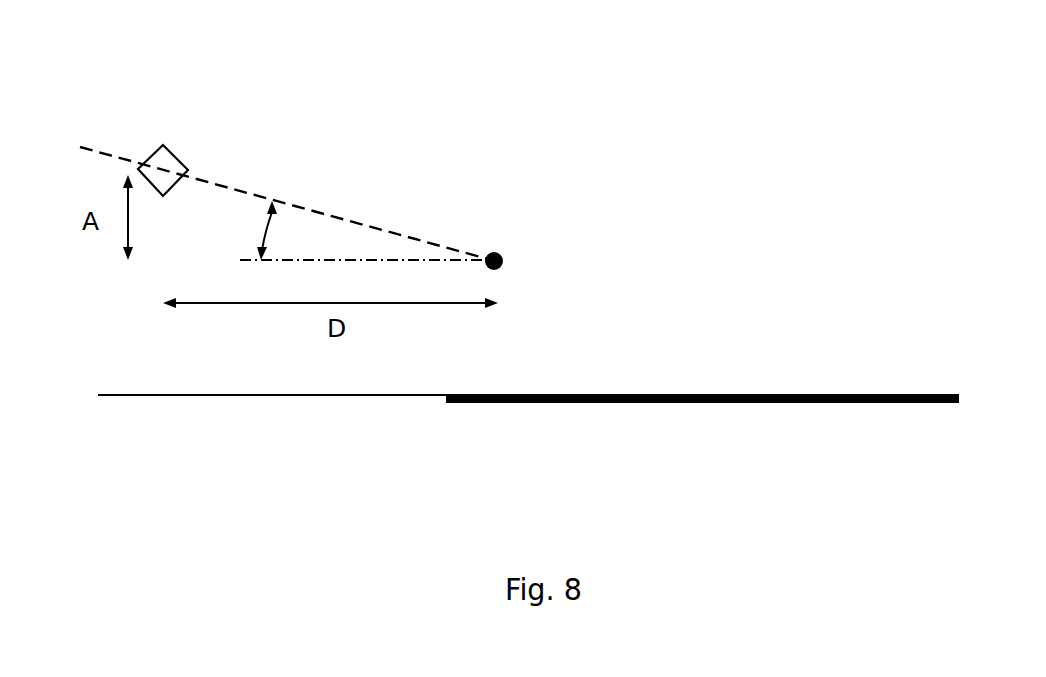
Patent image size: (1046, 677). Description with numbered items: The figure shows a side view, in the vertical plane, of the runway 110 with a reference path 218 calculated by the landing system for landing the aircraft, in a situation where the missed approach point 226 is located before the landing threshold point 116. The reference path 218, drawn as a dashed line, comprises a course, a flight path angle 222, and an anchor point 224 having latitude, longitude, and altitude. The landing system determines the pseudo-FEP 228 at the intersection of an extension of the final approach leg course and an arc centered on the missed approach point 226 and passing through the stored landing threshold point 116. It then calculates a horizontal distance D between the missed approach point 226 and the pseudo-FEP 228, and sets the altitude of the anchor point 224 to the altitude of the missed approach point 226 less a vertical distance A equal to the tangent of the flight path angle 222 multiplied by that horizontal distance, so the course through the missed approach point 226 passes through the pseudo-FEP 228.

The missed approach point 226 is at (163, 145).
The reference path 218 is at (230, 188).
The flight path angle 222 is at (317, 238).
The anchor point 224 is at (590, 201).
The pseudo-FEP 228 is at (500, 256).
The landing threshold point 116 is at (446, 403).
The runway 110 is at (711, 403).